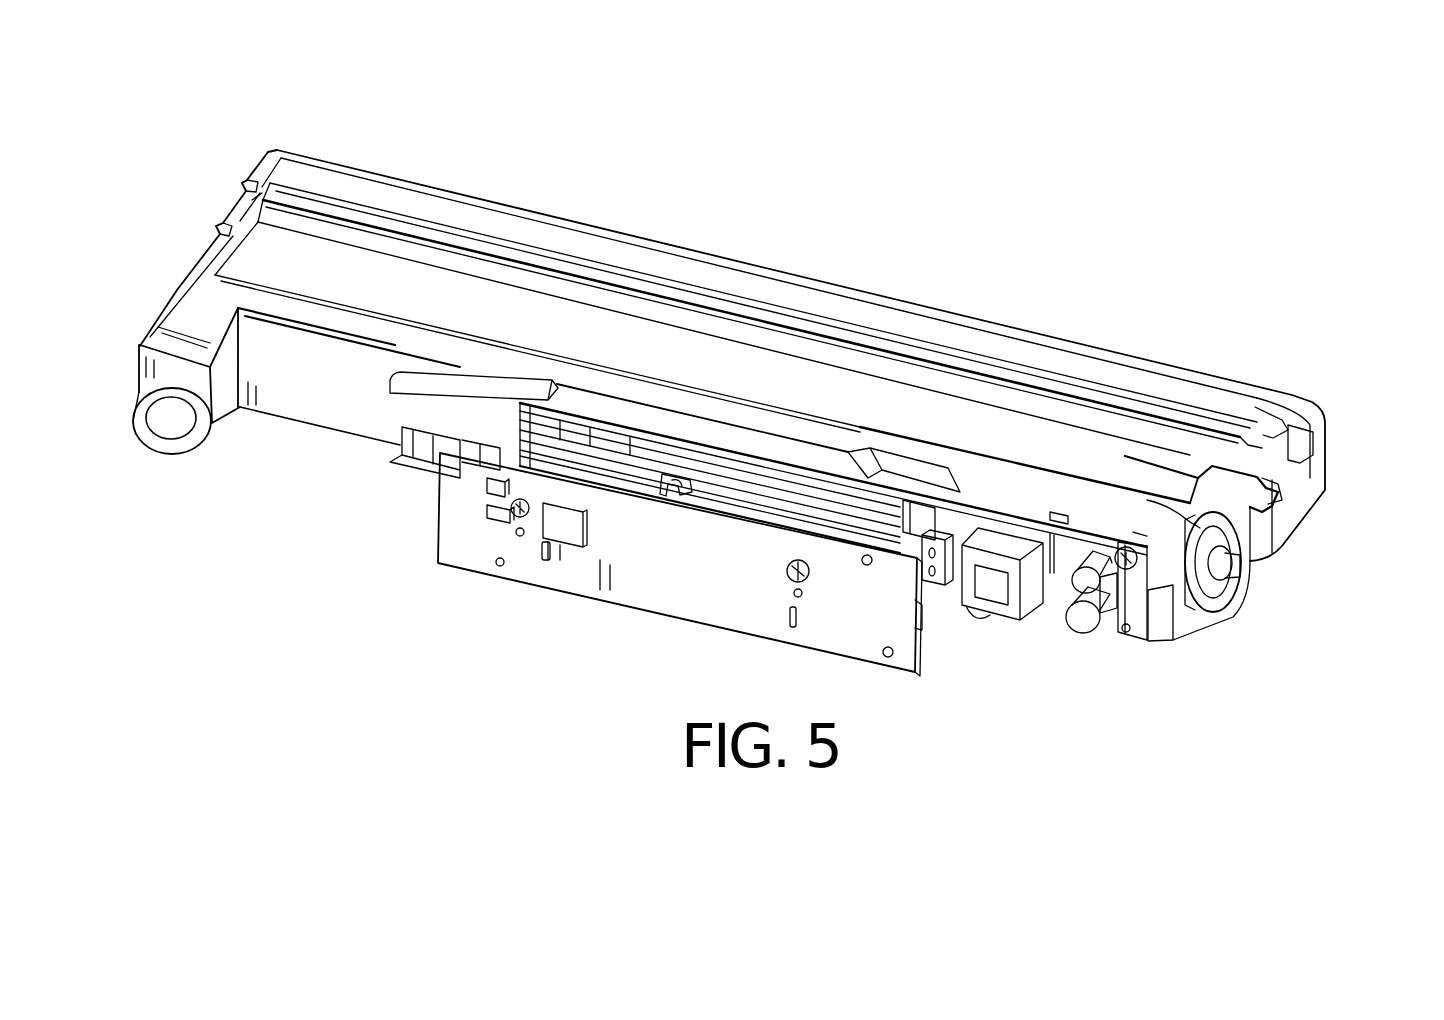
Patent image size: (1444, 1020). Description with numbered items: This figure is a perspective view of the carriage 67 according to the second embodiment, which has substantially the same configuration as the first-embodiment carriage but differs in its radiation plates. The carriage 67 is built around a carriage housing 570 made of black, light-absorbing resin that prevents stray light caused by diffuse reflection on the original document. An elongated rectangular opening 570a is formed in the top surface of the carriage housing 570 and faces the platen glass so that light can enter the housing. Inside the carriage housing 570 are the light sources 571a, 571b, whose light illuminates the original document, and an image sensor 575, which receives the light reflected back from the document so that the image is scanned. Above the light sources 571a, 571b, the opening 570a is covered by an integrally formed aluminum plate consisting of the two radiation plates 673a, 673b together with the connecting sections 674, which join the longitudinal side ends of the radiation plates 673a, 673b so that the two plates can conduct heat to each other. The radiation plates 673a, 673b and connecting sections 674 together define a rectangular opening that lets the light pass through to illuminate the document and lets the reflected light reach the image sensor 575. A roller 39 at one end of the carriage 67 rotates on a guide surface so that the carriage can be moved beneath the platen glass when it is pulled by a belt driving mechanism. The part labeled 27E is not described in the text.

The carriage housing 570 is at (1308, 483).
The elongated rectangular opening 570a is at (697, 322).
The light source 571a is at (247, 181).
The light source 571b is at (217, 227).
The radiation plate 673a is at (893, 318).
The radiation plate 673b is at (958, 405).
The connecting section 674 is at (256, 203).
The cylindrical boss 27E is at (158, 437).
The image sensor 575 is at (640, 587).
The carriage 67 is at (966, 662).
The roller 39 is at (1223, 612).